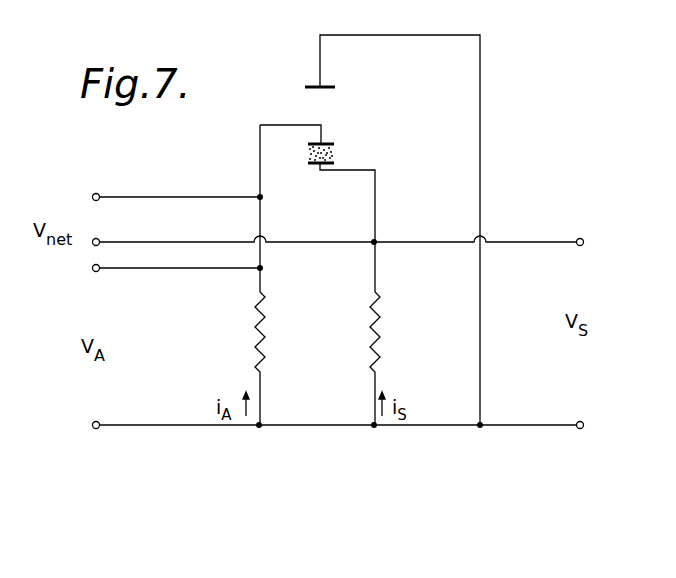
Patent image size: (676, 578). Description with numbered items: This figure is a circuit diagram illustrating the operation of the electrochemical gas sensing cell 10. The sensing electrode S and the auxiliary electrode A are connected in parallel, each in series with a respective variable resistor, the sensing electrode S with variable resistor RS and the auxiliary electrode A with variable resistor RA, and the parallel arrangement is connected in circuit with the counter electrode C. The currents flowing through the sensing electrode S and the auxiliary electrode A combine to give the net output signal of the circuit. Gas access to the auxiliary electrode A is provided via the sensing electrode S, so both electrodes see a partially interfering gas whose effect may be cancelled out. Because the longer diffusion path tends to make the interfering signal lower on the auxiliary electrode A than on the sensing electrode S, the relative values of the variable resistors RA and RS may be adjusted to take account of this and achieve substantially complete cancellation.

The gas sensor 10 is at (333, 153).
The auxiliary electrode A is at (323, 143).
The sensing electrode S is at (338, 165).
The counter electrode C is at (327, 82).
The variable resistor RA is at (235, 312).
The variable resistor RS is at (351, 313).